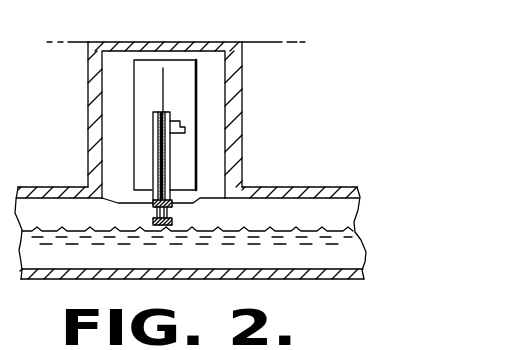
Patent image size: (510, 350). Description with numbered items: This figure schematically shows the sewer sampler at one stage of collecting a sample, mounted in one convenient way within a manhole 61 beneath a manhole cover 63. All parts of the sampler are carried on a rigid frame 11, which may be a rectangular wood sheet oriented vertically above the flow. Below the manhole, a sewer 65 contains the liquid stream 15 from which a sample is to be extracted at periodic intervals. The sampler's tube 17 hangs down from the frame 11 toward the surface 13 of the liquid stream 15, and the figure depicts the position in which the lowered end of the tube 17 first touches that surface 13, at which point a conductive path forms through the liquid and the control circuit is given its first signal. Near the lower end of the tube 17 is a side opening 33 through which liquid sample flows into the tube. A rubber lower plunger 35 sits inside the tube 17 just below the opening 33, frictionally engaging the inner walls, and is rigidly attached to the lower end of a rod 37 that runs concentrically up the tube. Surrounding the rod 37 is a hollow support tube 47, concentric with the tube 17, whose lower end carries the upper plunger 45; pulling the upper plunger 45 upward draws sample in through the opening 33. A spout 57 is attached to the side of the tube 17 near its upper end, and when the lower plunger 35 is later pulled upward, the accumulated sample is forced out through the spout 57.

The frame 11 is at (185, 92).
The surface 13 is at (260, 230).
The liquid stream 15 is at (263, 267).
The tube 17 is at (153, 155).
The opening 33 is at (175, 210).
The lower plunger 35 is at (153, 221).
The rod 37 is at (163, 80).
The upper plunger 45 is at (191, 201).
The support tube 47 is at (153, 124).
The spout 57 is at (186, 133).
The manhole 61 is at (136, 52).
The manhole cover 63 is at (177, 42).
The sewer 65 is at (357, 208).